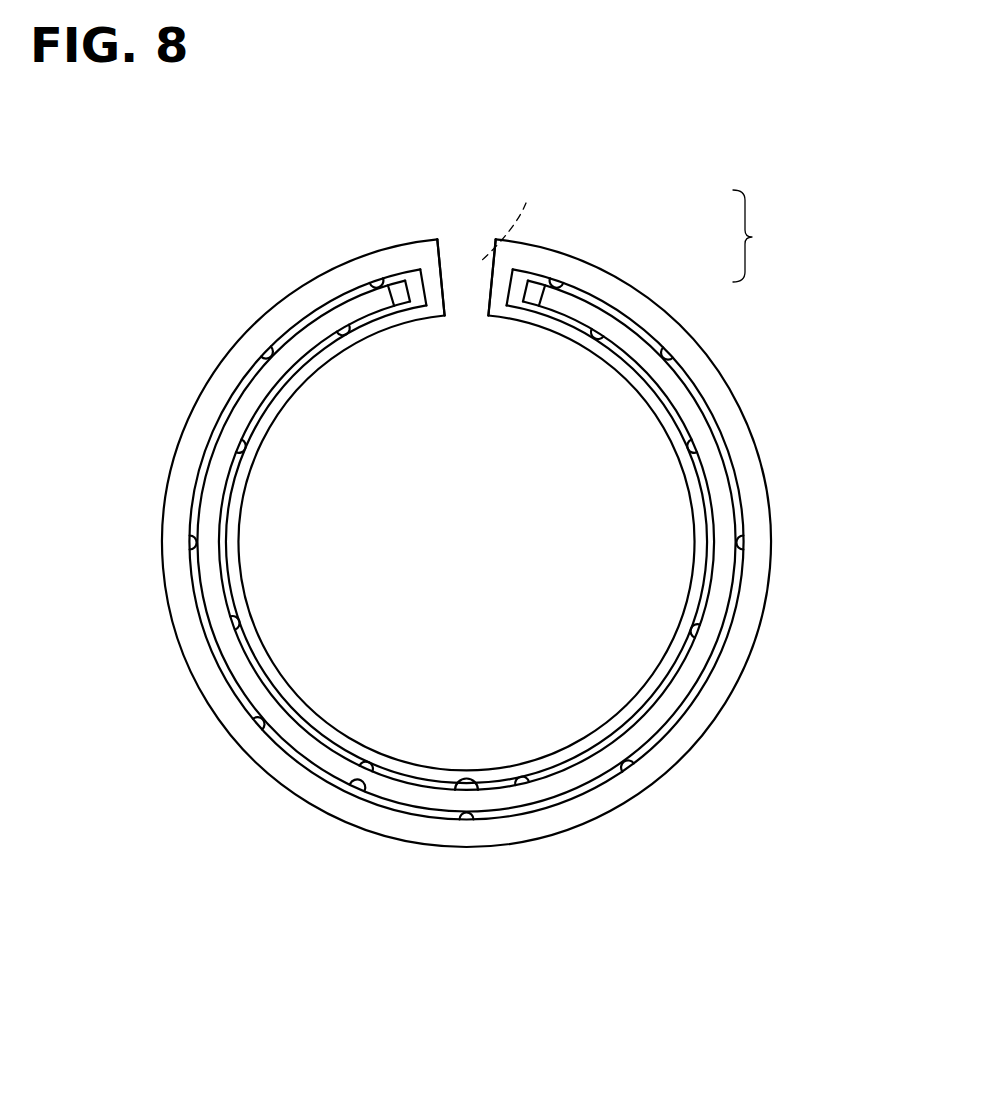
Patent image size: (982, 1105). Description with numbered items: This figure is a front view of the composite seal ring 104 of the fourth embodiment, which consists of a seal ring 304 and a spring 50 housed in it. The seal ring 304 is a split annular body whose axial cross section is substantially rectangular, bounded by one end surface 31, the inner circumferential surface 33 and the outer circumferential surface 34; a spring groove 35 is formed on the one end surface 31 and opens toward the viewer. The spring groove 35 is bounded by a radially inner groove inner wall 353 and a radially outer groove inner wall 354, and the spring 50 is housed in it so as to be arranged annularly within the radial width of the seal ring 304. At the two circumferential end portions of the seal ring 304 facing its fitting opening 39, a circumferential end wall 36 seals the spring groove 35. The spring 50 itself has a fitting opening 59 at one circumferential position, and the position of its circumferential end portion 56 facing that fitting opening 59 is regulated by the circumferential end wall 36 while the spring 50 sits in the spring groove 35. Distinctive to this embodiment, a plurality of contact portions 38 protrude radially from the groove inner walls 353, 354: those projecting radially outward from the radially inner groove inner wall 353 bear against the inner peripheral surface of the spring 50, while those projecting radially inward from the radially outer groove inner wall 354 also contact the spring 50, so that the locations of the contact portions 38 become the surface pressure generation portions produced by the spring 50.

The one end surface 31 is at (220, 712).
The inner circumferential surface 33 is at (238, 545).
The outer circumferential surface 34 is at (162, 540).
The spring groove 35 is at (735, 650).
The circumferential end wall 36 is at (436, 283).
The contact portion 38 is at (374, 284).
The fitting opening 39 is at (467, 265).
The spring 50 is at (640, 340).
The circumferential end portion 56 is at (392, 295).
The fitting opening 59 is at (516, 220).
The composite seal ring 104 is at (771, 236).
The seal ring 304 is at (653, 265).
The radially inner groove inner wall 353 is at (462, 786).
The radially outer groove inner wall 354 is at (360, 792).